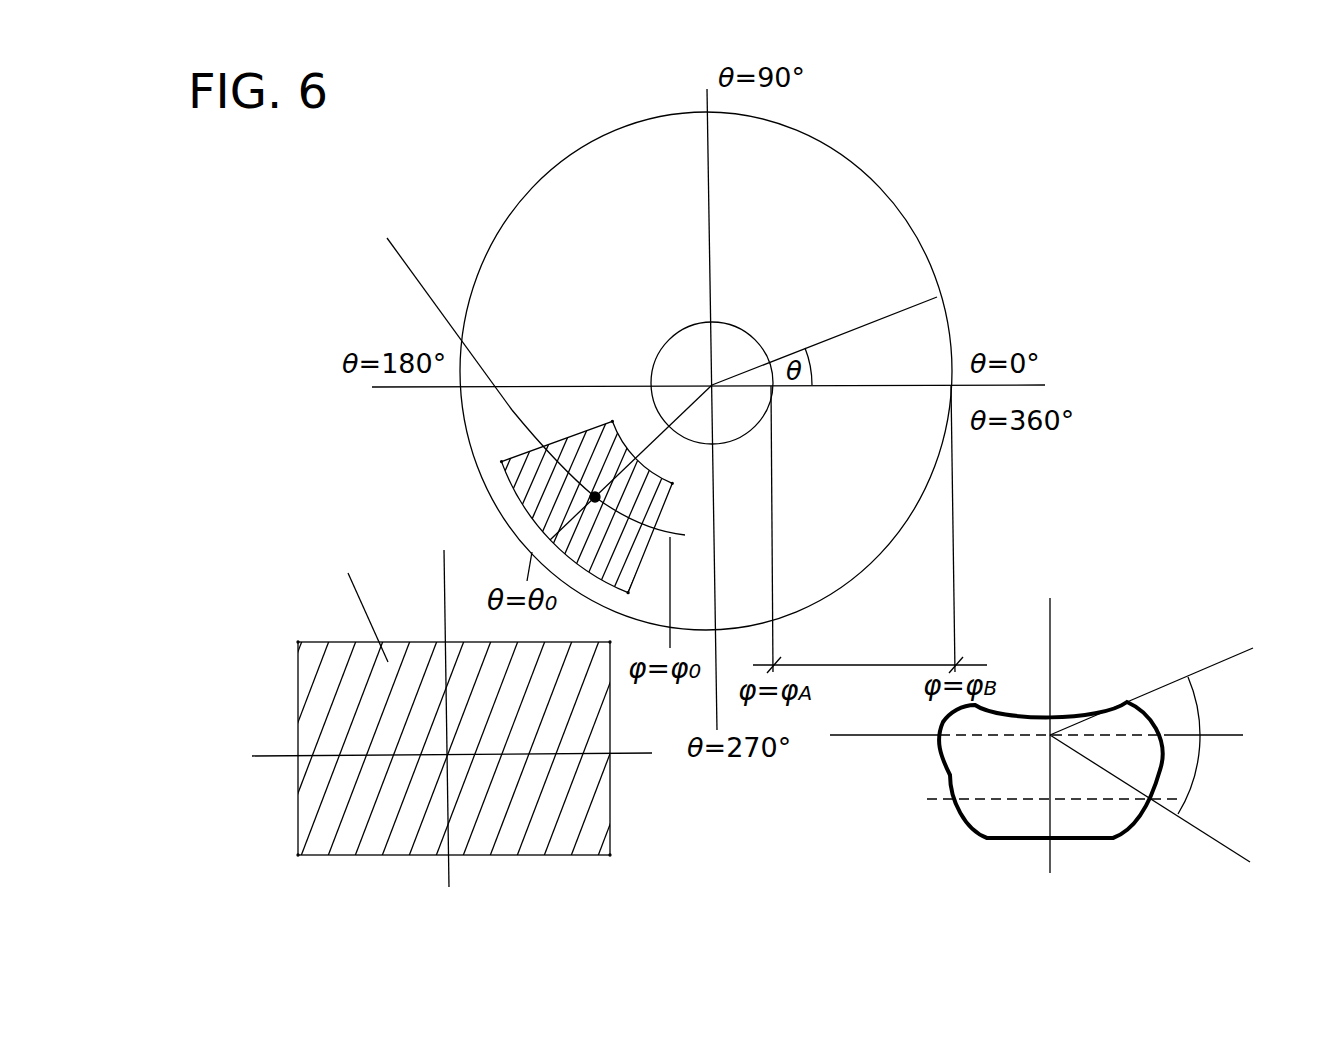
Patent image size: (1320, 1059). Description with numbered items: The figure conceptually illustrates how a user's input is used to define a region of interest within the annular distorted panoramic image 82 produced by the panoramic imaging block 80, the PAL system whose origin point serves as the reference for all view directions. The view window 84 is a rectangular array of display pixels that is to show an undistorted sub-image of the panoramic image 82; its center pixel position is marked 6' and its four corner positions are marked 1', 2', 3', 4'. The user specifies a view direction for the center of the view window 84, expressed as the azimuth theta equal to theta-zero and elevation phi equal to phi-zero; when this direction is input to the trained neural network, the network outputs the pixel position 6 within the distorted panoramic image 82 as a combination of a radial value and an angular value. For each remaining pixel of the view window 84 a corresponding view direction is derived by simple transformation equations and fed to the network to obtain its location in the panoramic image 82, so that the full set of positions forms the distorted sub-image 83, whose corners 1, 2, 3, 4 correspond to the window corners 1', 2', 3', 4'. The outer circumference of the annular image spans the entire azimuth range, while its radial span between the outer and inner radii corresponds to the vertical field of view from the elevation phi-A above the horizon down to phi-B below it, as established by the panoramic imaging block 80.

The panoramic imaging block 80 is at (968, 752).
The distorted panoramic image 82 is at (887, 223).
The distorted sub-image 83 is at (550, 515).
The view window 84 is at (582, 713).
The pixel position 6 is at (574, 462).
The center pixel position 6' is at (461, 718).
The corner position 1 is at (604, 408).
The corner position 2 is at (681, 488).
The corner position 3 is at (641, 596).
The corner position 4 is at (495, 446).
The corner position 1' is at (292, 625).
The corner position 2' is at (607, 631).
The corner position 3' is at (625, 865).
The corner position 4' is at (289, 868).